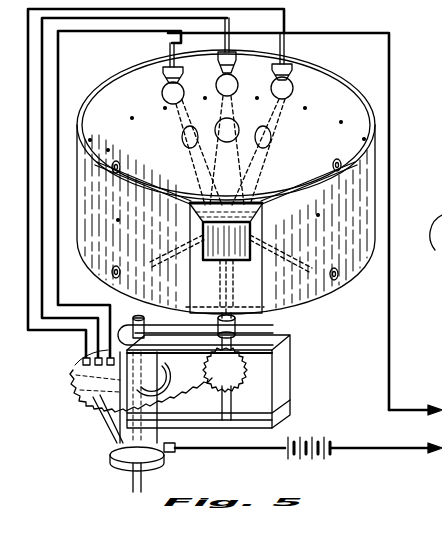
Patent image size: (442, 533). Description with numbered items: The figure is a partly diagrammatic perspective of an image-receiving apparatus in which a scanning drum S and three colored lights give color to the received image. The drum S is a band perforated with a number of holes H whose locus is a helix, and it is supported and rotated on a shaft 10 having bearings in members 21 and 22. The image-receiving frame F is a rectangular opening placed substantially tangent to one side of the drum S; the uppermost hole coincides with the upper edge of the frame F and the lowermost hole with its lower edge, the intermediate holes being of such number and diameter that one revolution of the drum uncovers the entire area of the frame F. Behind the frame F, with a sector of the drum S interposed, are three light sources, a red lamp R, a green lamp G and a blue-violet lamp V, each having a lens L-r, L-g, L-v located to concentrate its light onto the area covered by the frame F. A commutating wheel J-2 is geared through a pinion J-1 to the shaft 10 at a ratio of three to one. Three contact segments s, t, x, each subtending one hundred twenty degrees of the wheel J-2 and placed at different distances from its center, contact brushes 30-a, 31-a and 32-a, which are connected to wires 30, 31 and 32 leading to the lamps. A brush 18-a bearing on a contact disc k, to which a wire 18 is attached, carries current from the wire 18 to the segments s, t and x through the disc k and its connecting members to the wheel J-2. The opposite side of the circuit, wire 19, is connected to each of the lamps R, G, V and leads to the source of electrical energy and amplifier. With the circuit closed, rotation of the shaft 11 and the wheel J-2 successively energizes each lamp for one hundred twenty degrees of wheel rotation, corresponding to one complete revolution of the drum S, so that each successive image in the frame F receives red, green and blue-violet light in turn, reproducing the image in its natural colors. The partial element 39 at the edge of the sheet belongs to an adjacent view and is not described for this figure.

The red lamp R is at (163, 94).
The green lamp G is at (216, 84).
The blue-violet lamp V is at (271, 88).
The lens of the red lamp L-r is at (182, 137).
The lens of the green lamp L-g is at (220, 123).
The lens of the blue-violet lamp L-v is at (262, 126).
The holes H is at (318, 216).
The scanning drum S is at (316, 281).
The image-receiving frame F is at (240, 262).
The wire 30 is at (37, 331).
The wire 31 is at (62, 327).
The wire 32 is at (80, 304).
The brush 30-a is at (82, 363).
The brush 31-a is at (96, 367).
The brush 32-a is at (108, 368).
The shaft 10 is at (190, 322).
The contact segment x is at (150, 358).
The contact segment t is at (174, 362).
The bearing member 21 is at (260, 334).
The bearing member 22 is at (258, 405).
The pinion J-1 is at (234, 378).
The commutating wheel J-2 is at (190, 392).
The contact segment s is at (117, 388).
The contact disc k is at (110, 458).
The shaft 11 is at (130, 481).
The brush 18-a is at (172, 452).
The wire 18 is at (390, 451).
The wire 19 is at (389, 395).
The adjacent figure element 39 is at (436, 250).